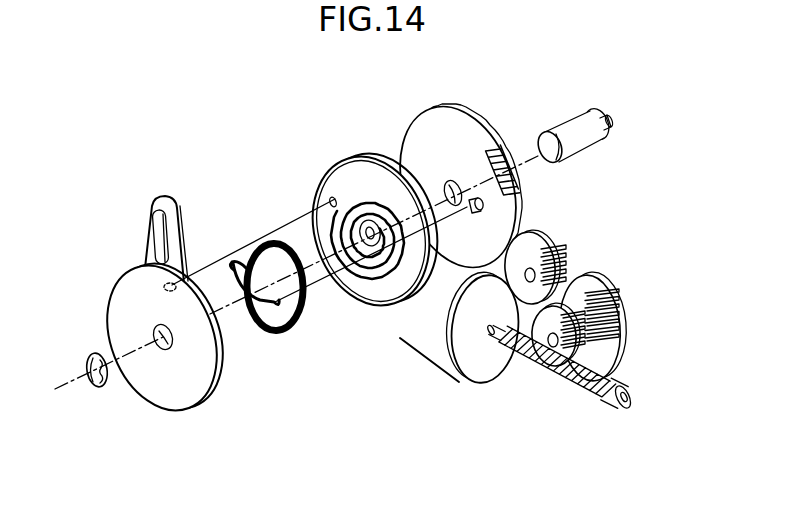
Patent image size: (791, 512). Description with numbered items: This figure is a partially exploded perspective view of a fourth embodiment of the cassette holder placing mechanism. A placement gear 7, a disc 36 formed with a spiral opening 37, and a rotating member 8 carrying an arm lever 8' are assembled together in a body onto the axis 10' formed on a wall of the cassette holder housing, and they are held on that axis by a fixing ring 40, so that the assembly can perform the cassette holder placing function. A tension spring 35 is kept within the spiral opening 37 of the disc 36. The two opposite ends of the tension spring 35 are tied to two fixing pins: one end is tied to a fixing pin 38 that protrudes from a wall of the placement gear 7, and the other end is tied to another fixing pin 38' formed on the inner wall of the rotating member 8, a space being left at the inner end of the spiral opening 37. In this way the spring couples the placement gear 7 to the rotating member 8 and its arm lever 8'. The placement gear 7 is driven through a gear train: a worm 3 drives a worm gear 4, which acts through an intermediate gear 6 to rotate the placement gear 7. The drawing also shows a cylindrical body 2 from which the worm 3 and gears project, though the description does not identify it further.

The cylindrical gear housing body 2 is at (490, 370).
The worm 3 is at (599, 403).
The worm gear 4 is at (620, 354).
The intermediate gear 6 is at (562, 249).
The placement gear 7 is at (453, 112).
The rotating member 8 is at (165, 356).
The arm lever 8' is at (177, 218).
The axis 10' is at (597, 137).
The tension spring 35 is at (273, 334).
The disc 36 is at (360, 157).
The spiral opening 37 is at (367, 284).
The fixing pin 38 is at (531, 197).
The fixing pin 38' is at (112, 258).
The fixing ring 40 is at (89, 388).